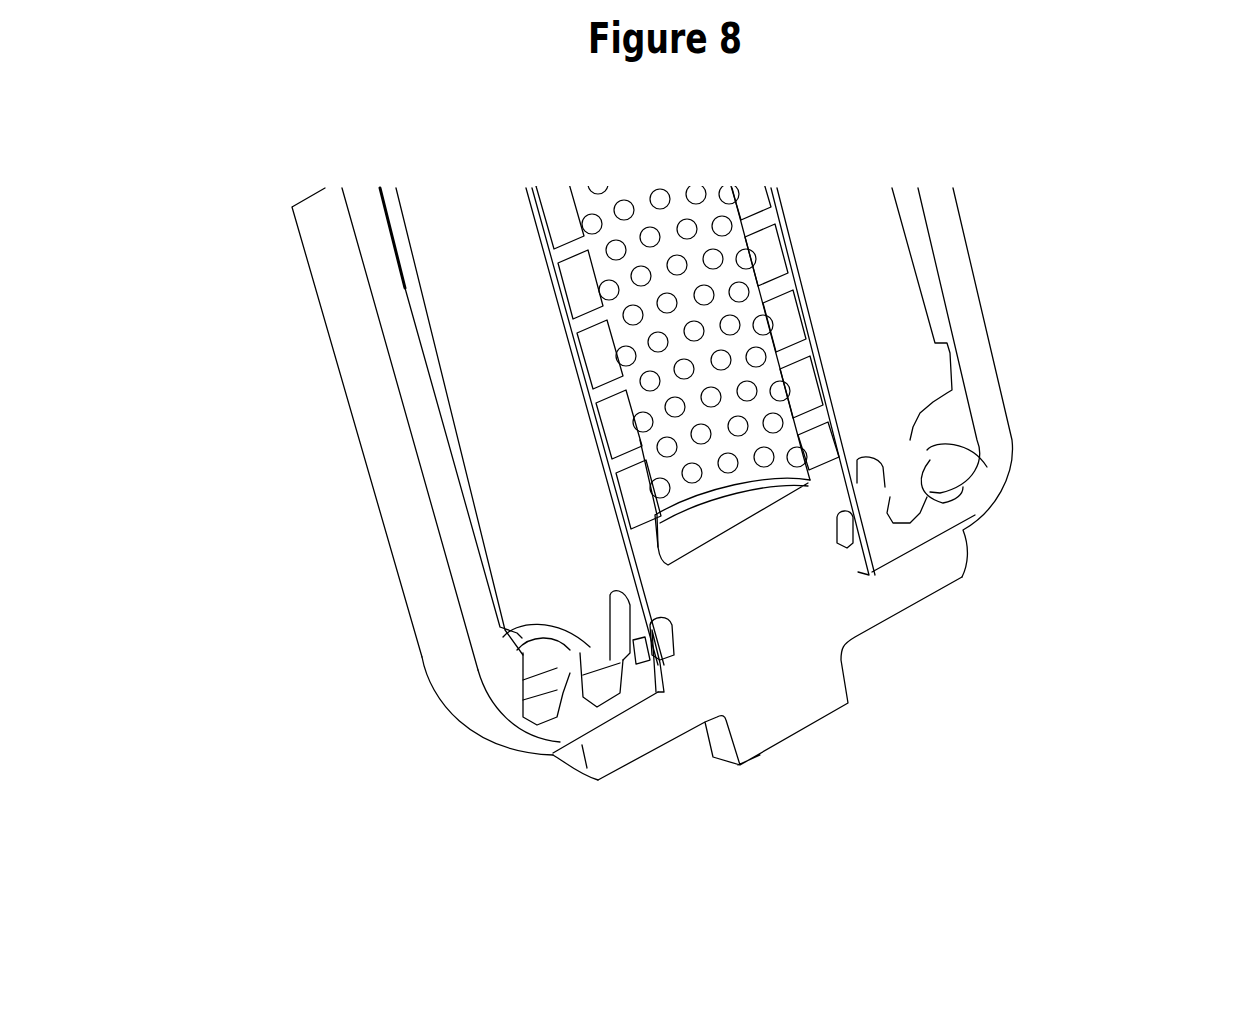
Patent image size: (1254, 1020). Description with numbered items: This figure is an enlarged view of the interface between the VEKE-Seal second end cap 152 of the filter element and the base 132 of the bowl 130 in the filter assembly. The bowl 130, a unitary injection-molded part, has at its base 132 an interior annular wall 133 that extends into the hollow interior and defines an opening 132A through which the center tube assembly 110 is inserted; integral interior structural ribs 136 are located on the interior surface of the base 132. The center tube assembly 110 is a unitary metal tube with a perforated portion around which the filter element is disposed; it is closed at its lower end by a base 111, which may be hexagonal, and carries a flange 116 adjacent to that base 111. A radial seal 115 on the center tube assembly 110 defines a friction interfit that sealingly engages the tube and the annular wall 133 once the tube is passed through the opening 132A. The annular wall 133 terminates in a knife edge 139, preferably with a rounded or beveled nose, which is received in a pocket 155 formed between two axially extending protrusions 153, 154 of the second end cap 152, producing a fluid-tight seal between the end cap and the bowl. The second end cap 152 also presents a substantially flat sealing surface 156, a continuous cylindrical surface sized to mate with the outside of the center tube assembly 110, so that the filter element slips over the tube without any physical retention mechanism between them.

The center tube assembly 110 is at (449, 369).
The bowl 130 is at (324, 471).
The sealing surface 156 is at (376, 419).
The pocket 155 is at (359, 586).
The interior structural ribs 136 is at (339, 660).
The axially extending protrusion 153 is at (356, 713).
The flange 116 is at (497, 835).
The opening 132A is at (813, 536).
The base 111 is at (781, 701).
The interior annular wall 133 is at (930, 680).
The radial seal 115 is at (937, 585).
The base 132 is at (1082, 382).
The second end cap 152 is at (1066, 314).
The knife edge 139 is at (1049, 420).
The axially extending protrusion 154 is at (1048, 506).